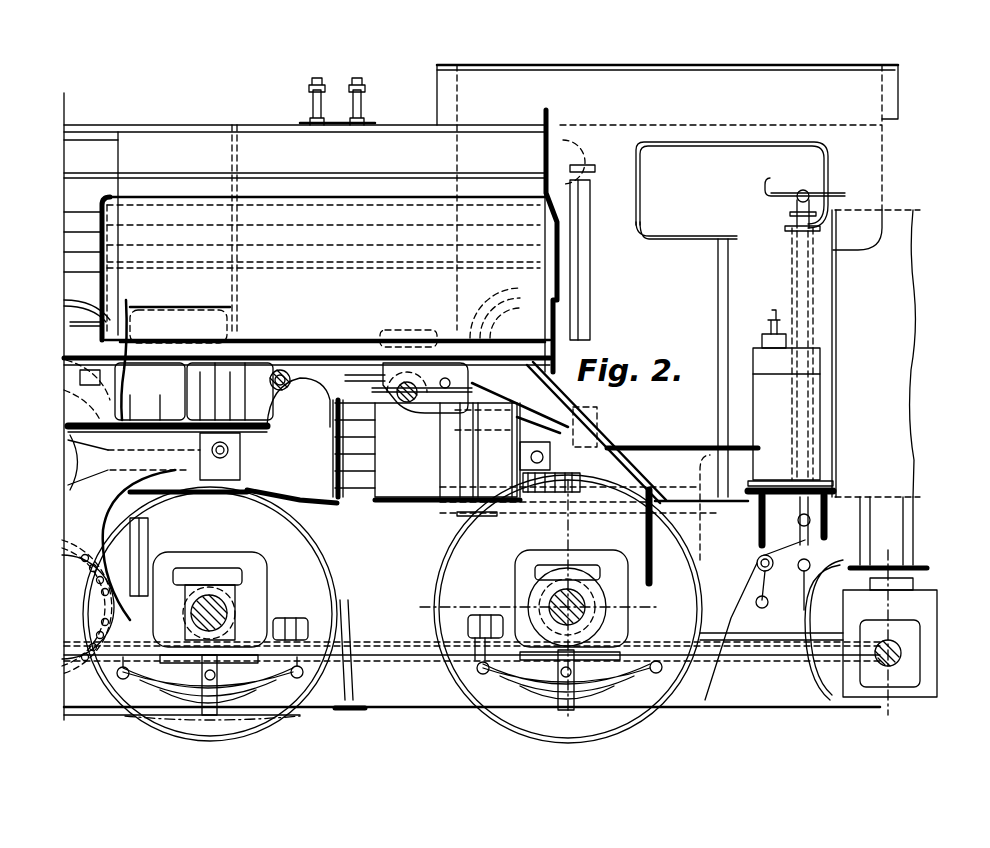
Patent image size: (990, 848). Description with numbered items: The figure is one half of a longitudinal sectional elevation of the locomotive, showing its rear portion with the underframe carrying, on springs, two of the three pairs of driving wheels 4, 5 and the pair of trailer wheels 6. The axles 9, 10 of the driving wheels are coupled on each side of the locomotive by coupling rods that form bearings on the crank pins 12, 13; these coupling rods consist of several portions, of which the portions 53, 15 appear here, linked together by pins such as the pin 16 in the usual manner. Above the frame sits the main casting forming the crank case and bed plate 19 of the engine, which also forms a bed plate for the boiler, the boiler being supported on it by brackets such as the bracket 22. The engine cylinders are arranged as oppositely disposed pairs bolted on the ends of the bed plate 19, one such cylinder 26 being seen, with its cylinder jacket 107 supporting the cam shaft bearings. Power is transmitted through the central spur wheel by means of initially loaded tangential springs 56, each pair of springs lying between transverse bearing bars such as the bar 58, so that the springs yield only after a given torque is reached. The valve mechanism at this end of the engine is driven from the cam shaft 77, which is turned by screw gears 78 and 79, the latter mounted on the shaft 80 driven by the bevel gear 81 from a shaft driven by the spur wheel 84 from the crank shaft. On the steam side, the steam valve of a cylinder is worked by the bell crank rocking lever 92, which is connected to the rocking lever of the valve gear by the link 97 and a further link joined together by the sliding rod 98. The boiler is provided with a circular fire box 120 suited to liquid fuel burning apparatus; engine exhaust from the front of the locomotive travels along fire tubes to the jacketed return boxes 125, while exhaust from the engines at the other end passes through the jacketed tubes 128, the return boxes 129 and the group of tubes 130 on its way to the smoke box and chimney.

The driving wheels 4 is at (243, 720).
The driving wheels 5 is at (487, 695).
The trailer wheels 6 is at (820, 683).
The axle 9 is at (210, 604).
The axle 10 is at (527, 600).
The crank pin 12 is at (200, 660).
The crank pin 13 is at (583, 657).
The coupling rod portion 15 is at (417, 643).
The pin 16 is at (240, 660).
The bed plate 19 is at (270, 424).
The bracket 22 is at (226, 390).
The cylinder 26 is at (407, 468).
The coupling rod portion 53 is at (137, 677).
The tangential springs 56 is at (118, 572).
The transverse bearing bar 58 is at (90, 597).
The cam shaft 77 is at (390, 378).
The screw gear 78 is at (414, 388).
The screw gear 79 is at (410, 335).
The shaft 80 is at (325, 347).
The bevel gear 81 is at (87, 360).
The spur wheel 84 is at (128, 392).
The bell crank rocking lever 92 is at (295, 380).
The link 97 is at (238, 356).
The sliding rod 98 is at (130, 372).
The cylinder jacket 107 is at (392, 392).
The circular fire box 120 is at (352, 197).
The jacketed return box 125 is at (563, 215).
The jacketed tube 128 is at (540, 366).
The return box 129 is at (572, 296).
The group of tubes 130 is at (388, 262).